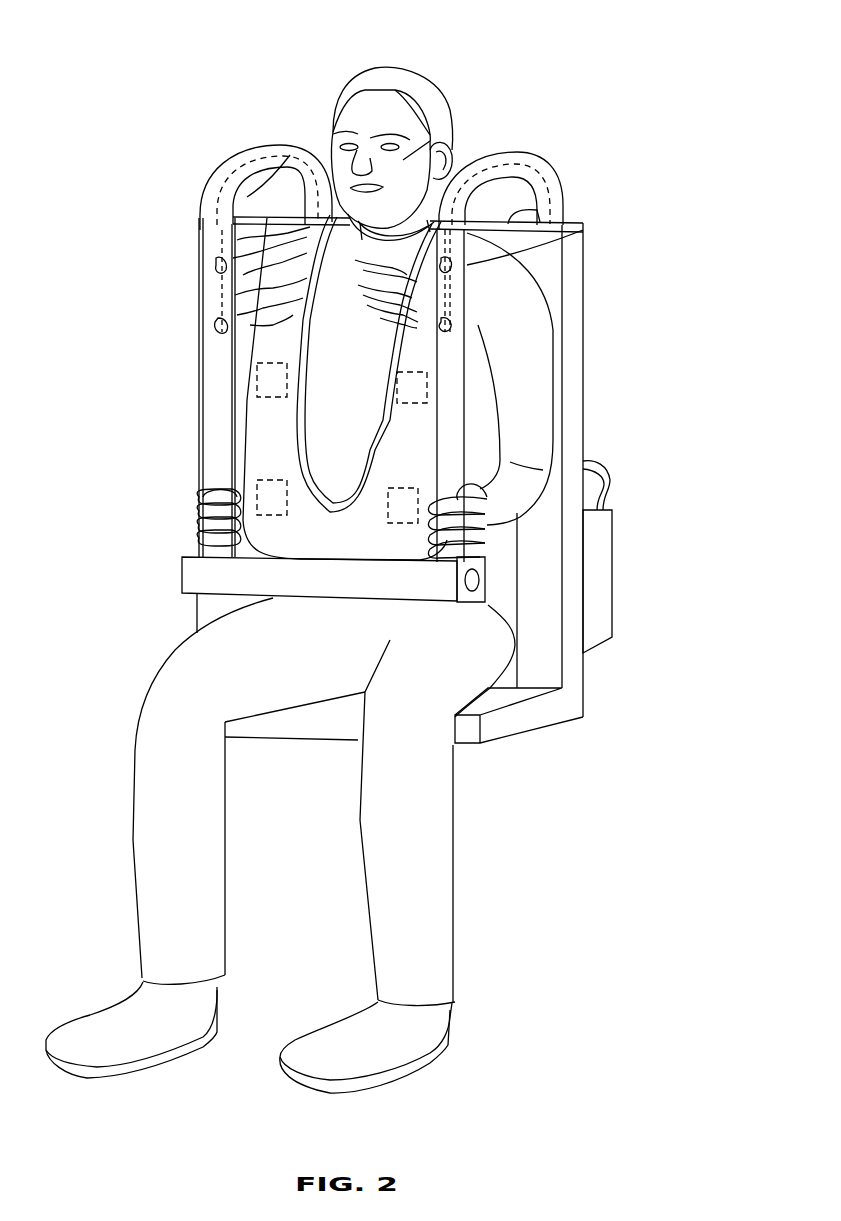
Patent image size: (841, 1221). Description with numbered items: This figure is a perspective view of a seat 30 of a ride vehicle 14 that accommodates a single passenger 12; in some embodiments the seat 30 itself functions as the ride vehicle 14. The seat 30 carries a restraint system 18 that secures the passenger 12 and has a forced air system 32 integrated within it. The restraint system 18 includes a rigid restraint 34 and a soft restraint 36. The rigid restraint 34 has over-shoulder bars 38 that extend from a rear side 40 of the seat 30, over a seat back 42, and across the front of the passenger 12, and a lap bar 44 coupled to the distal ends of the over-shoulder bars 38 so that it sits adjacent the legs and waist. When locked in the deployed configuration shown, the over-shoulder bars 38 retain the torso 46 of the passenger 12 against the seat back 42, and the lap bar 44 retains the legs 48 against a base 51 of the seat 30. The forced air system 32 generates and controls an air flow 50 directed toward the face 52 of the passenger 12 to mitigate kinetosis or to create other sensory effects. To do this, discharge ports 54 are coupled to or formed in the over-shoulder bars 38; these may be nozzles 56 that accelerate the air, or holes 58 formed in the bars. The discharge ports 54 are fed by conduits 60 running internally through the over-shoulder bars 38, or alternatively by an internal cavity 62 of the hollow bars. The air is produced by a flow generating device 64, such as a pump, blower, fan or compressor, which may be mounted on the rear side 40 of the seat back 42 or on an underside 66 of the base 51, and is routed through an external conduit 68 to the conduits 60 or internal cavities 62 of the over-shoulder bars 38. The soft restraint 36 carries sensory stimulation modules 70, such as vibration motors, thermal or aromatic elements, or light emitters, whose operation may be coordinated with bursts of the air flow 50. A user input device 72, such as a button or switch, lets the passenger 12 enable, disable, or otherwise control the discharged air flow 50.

The passenger 12 is at (153, 758).
The ride vehicle 14 is at (184, 120).
The restraint system 18 is at (275, 133).
The seat 30 is at (614, 692).
The forced air system 32 is at (200, 176).
The rigid restraint 34 is at (506, 98).
The soft restraint 36 is at (327, 543).
The over-shoulder bars 38 is at (217, 440).
The rear side 40 is at (595, 292).
The seat back 42 is at (583, 254).
The lap bar 44 is at (193, 577).
The torso 46 is at (354, 406).
The legs 48 is at (153, 910).
The air flow 50 is at (272, 337).
The base 51 is at (493, 727).
The face 52 is at (452, 150).
The discharge ports 54 is at (262, 186).
The nozzles 56 is at (220, 262).
The holes 58 is at (233, 215).
The conduits 60 is at (247, 165).
The internal cavity 62 is at (457, 387).
The flow generating device 64 is at (613, 566).
The underside 66 is at (587, 726).
The external conduit 68 is at (545, 212).
The sensory stimulation modules 70 is at (270, 400).
The user input device 72 is at (473, 597).